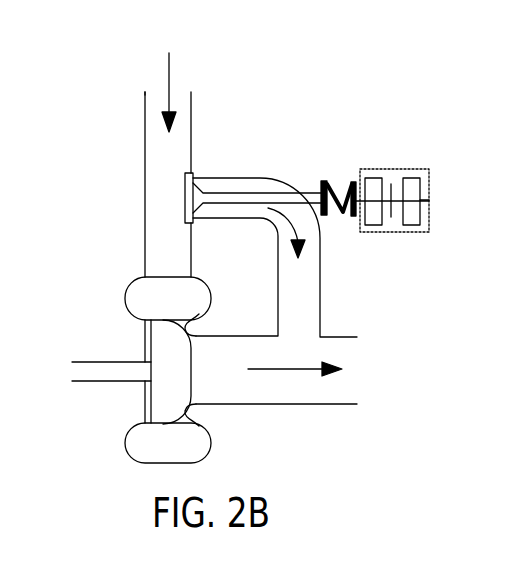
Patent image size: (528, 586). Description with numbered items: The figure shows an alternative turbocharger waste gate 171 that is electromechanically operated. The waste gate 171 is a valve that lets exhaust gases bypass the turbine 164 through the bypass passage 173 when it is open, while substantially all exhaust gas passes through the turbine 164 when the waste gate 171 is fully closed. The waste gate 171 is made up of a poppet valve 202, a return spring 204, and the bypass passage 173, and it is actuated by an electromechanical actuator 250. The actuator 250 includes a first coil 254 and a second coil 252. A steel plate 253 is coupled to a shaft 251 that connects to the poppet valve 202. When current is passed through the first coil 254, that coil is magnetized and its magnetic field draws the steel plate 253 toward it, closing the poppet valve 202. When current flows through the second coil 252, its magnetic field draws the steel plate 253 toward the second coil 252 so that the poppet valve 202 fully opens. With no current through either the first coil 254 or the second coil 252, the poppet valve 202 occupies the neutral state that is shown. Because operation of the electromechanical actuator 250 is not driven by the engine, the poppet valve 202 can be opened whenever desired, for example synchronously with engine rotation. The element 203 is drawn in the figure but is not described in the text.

The turbocharger waste gate 171 is at (285, 104).
The poppet valve 202 is at (248, 193).
The flange 203 is at (195, 222).
The return spring 204 is at (345, 212).
The electromechanical actuator 250 is at (420, 196).
The shaft 251 is at (428, 205).
The second coil 252 is at (375, 177).
The steel plate 253 is at (391, 223).
The first coil 254 is at (413, 177).
The bypass passage 173 is at (322, 307).
The turbine 164 is at (168, 370).